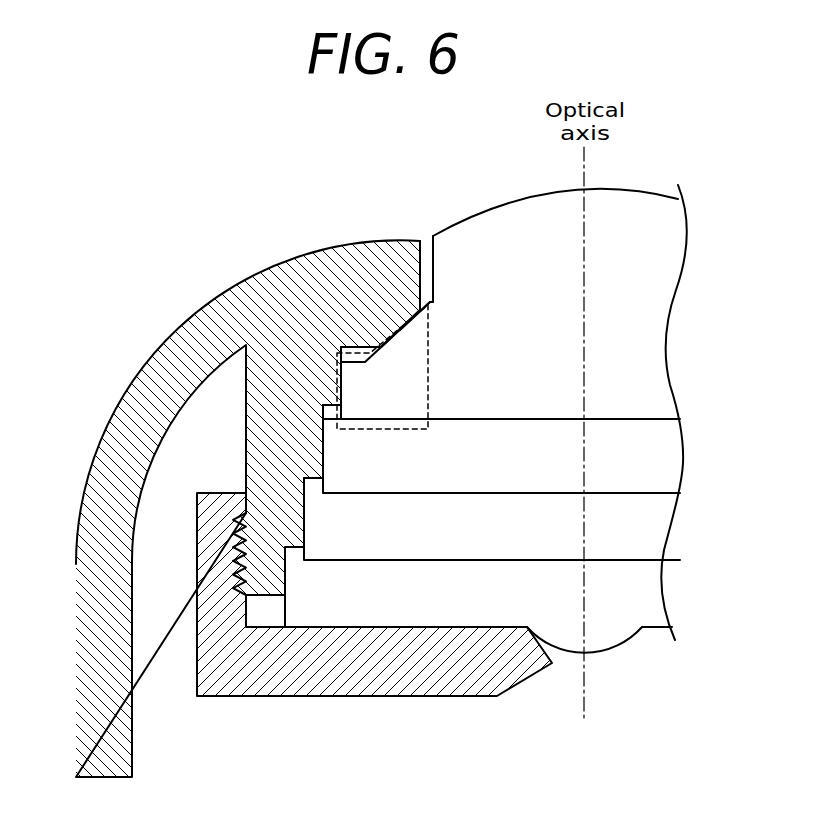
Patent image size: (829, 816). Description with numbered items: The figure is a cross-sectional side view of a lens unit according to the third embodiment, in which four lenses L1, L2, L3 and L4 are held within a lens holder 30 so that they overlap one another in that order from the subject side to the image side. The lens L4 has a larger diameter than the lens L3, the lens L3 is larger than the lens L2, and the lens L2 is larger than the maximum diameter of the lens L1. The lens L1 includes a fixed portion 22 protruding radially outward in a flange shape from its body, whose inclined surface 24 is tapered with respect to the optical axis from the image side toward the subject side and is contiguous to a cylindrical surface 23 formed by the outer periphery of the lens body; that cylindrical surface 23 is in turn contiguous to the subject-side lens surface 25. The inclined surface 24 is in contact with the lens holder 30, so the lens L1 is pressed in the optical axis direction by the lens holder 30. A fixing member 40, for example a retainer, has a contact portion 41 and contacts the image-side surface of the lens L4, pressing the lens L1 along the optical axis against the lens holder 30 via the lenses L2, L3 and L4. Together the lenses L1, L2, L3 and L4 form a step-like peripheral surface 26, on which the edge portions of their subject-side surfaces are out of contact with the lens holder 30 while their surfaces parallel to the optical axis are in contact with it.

The lens holder 30 is at (305, 273).
The inclined surface 24 is at (360, 302).
The cylindrical surface 23 is at (433, 266).
The lens surface 25 is at (492, 210).
The fixed portion 22 is at (432, 378).
The peripheral surface 26 is at (290, 460).
The fixing member 40 is at (272, 668).
The contact portion 41 is at (345, 628).
The lens L1 is at (535, 289).
The lens L2 is at (647, 461).
The lens L3 is at (647, 529).
The lens L4 is at (647, 598).